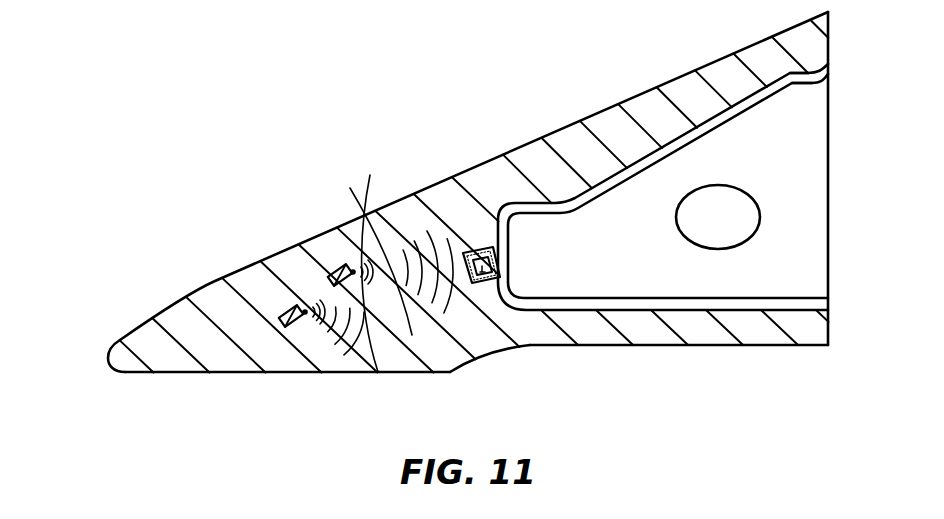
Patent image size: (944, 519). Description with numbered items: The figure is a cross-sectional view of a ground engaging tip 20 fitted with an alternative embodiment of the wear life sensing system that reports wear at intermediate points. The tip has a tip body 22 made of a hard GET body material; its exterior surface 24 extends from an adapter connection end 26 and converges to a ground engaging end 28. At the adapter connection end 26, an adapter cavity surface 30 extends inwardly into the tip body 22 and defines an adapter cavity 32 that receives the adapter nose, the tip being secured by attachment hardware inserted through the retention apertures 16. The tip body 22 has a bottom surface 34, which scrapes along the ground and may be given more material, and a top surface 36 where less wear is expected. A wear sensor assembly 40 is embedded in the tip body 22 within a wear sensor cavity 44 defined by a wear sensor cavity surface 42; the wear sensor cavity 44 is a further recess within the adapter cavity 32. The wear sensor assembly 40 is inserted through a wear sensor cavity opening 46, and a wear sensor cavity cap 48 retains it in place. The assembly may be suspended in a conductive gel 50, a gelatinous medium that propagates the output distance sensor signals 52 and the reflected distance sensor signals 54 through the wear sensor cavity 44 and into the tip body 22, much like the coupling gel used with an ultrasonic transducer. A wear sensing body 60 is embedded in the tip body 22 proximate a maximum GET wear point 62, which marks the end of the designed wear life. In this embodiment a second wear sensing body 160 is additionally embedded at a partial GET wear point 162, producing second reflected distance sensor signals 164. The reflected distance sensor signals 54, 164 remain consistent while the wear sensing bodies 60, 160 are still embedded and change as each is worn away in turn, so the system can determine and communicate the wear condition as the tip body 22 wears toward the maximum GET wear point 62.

The ground engaging tip 20 is at (122, 131).
The tip body 22 is at (183, 323).
The exterior surface 24 is at (723, 58).
The adapter connection end 26 is at (828, 50).
The ground engaging end 28 is at (108, 357).
The adapter cavity surface 30 is at (787, 82).
The adapter cavity 32 is at (807, 163).
The retention aperture 16 is at (757, 228).
The bottom surface 34 is at (502, 357).
The top surface 36 is at (215, 283).
The wear sensor assembly 40 is at (482, 283).
The wear sensor cavity surface 42 is at (472, 247).
The wear sensor cavity 44 is at (481, 265).
The wear sensor cavity opening 46 is at (546, 232).
The wear sensor cavity cap 48 is at (505, 258).
The conductive gel 50 is at (457, 252).
The output distance sensor signals 52 is at (369, 260).
The reflected distance sensor signals 54 is at (368, 248).
The wear sensing body 60 is at (292, 305).
The maximum GET wear point 62 is at (347, 270).
The second wear sensing body 160 is at (285, 318).
The partial GET wear point 162 is at (305, 313).
The second reflected distance sensor signals 164 is at (330, 285).